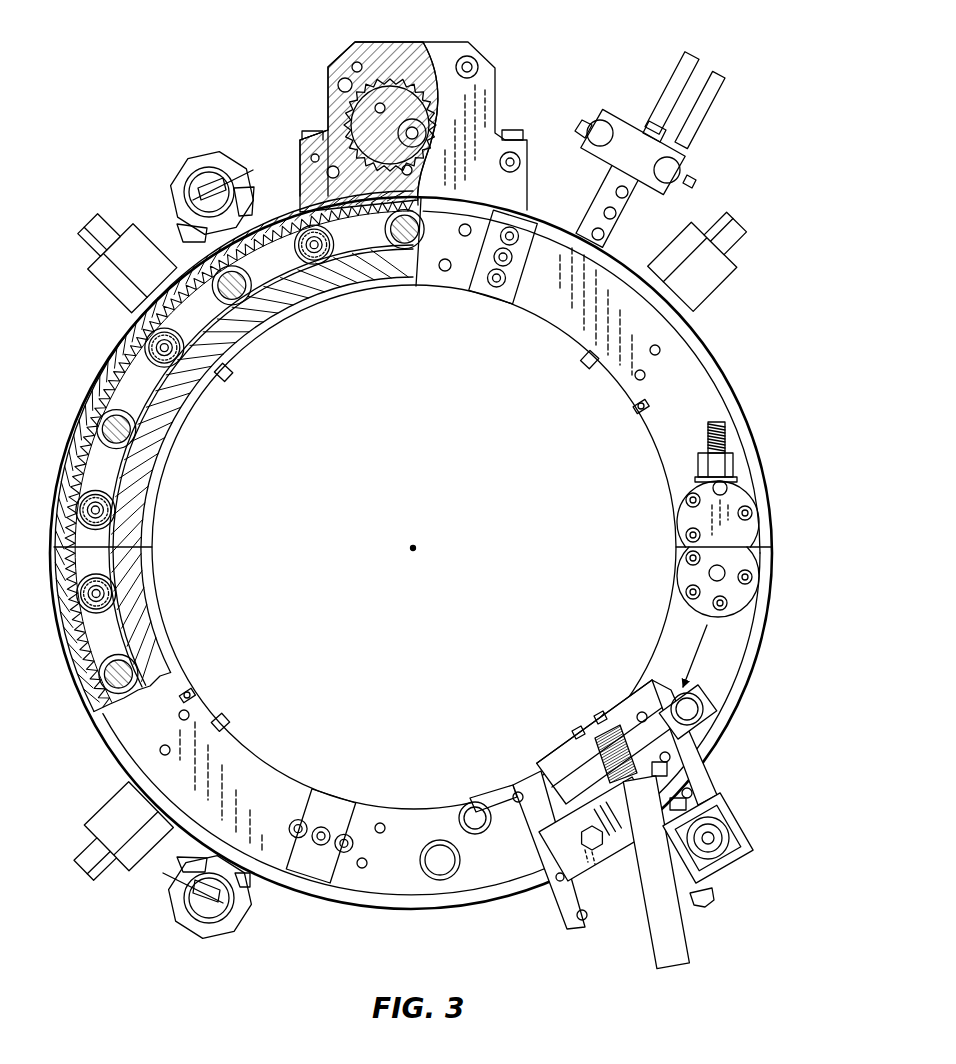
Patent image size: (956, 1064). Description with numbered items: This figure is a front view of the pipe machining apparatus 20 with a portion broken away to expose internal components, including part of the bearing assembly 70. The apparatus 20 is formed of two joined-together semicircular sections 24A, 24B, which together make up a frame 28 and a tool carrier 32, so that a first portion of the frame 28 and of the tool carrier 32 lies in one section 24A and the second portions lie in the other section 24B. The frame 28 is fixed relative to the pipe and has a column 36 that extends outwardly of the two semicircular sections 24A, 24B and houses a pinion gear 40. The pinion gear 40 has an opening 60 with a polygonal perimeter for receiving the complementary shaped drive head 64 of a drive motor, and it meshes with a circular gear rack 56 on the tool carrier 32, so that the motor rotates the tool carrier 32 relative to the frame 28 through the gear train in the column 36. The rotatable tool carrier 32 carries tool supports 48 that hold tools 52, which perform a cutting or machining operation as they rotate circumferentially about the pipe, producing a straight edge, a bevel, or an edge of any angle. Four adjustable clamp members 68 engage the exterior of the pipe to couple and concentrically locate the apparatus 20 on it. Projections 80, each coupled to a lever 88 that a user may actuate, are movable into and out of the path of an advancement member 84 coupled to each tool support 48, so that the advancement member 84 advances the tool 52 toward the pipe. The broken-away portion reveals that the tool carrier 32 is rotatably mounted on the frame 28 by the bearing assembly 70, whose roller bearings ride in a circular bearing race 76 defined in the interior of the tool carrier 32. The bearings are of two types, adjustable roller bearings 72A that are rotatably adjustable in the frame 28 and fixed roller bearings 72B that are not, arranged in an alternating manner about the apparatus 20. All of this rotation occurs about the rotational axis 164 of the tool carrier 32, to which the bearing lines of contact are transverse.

The pipe machining apparatus 20 is at (793, 153).
The semicircular section 24A is at (724, 336).
The semicircular section 24B is at (760, 698).
The frame 28 is at (57, 472).
The tool carrier 32 is at (693, 398).
The column 36 is at (487, 42).
The pinion gear 40 is at (348, 137).
The tool support 48 is at (598, 945).
The tool 52 is at (557, 763).
The circular gear rack 56 is at (112, 340).
The opening 60 is at (357, 95).
The drive head 64 is at (327, 143).
The clamp member 68 is at (754, 245).
The bearing assembly 70 is at (86, 537).
The adjustable roller bearing 72A is at (188, 330).
The fixed roller bearing 72B is at (121, 402).
The circular bearing race 76 is at (112, 547).
The projection 80 is at (614, 130).
The advancement member 84 is at (738, 826).
The lever 88 is at (690, 75).
The rotational axis 164 is at (414, 546).